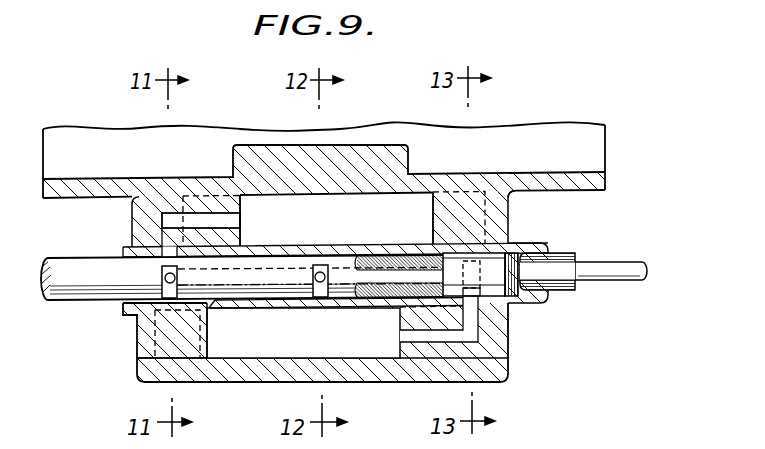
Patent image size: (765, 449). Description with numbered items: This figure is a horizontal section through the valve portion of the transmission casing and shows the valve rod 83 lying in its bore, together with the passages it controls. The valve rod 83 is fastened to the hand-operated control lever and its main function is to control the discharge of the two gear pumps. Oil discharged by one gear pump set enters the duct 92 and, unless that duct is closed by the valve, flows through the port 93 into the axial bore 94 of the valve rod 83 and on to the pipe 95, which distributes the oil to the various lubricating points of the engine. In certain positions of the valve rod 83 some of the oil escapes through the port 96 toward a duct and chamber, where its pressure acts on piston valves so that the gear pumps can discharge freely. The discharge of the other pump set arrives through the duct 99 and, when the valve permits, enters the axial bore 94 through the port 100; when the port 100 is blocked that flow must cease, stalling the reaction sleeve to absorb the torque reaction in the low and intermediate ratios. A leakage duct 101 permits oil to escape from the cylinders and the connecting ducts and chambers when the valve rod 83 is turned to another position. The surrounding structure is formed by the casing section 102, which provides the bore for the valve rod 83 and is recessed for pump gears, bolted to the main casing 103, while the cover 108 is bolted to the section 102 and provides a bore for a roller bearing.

The valve rod 83 is at (62, 289).
The duct 92 is at (173, 228).
The port 93 is at (163, 279).
The axial bore 94 is at (277, 275).
The pipe 95 is at (623, 262).
The port 96 is at (323, 281).
The duct 99 is at (478, 332).
The port 100 is at (488, 299).
The leakage duct 101 is at (250, 307).
The casing section 102 is at (143, 340).
The main casing 103 is at (498, 219).
The cover 108 is at (508, 377).